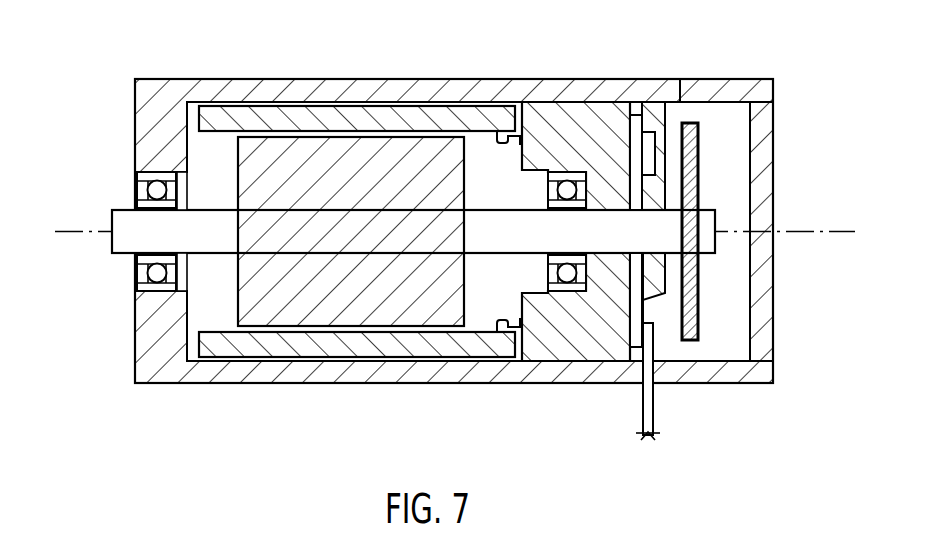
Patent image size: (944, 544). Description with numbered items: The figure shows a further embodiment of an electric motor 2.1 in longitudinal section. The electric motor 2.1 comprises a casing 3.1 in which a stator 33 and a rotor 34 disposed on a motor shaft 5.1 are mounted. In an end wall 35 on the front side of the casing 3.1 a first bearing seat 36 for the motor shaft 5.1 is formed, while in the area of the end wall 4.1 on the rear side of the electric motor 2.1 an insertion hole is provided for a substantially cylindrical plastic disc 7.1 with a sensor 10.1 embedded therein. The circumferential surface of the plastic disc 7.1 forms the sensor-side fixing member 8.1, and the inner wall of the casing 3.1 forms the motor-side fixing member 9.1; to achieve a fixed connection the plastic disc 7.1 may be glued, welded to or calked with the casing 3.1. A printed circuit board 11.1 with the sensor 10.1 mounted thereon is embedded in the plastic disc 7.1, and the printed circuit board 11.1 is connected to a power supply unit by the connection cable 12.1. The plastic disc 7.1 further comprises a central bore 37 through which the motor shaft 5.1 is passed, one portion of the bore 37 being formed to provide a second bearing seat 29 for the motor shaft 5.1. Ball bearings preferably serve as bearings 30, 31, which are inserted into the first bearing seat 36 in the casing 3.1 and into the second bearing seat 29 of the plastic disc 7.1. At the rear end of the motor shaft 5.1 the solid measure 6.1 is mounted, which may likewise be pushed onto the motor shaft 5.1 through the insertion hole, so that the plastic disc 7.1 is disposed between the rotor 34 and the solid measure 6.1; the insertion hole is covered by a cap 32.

The electric motor 2.1 is at (106, 64).
The casing 3.1 is at (261, 92).
The end wall 4.1 is at (774, 197).
The motor shaft 5.1 is at (123, 250).
The solid measure 6.1 is at (699, 320).
The plastic disc 7.1 is at (562, 110).
The sensor-side fixing member 8.1 is at (597, 363).
The motor-side fixing member 9.1 is at (637, 120).
The sensor 10.1 is at (667, 124).
The printed circuit board 11.1 is at (657, 137).
The connection cable 12.1 is at (653, 413).
The second bearing seat 29 is at (560, 292).
The bearing 30 is at (153, 176).
The bearing 31 is at (547, 172).
The cap 32 is at (760, 165).
The stator 33 is at (312, 355).
The rotor 34 is at (262, 320).
The end wall 35 is at (143, 355).
The first bearing seat 36 is at (145, 298).
The central bore 37 is at (609, 175).